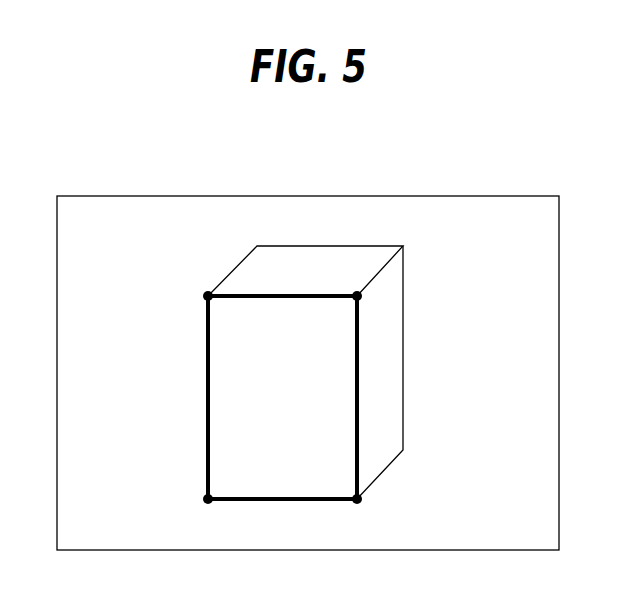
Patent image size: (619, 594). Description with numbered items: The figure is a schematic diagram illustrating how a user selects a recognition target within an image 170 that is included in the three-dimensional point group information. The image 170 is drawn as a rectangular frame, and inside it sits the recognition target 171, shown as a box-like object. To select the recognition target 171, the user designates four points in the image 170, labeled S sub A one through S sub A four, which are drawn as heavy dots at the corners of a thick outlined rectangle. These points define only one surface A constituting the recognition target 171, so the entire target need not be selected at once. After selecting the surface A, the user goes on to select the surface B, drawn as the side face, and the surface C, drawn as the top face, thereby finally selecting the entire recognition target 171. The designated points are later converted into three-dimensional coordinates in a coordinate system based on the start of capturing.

The image 170 is at (497, 195).
The recognition target 171 is at (289, 324).
The surface A is at (282, 397).
The surface B is at (380, 372).
The surface C is at (305, 271).